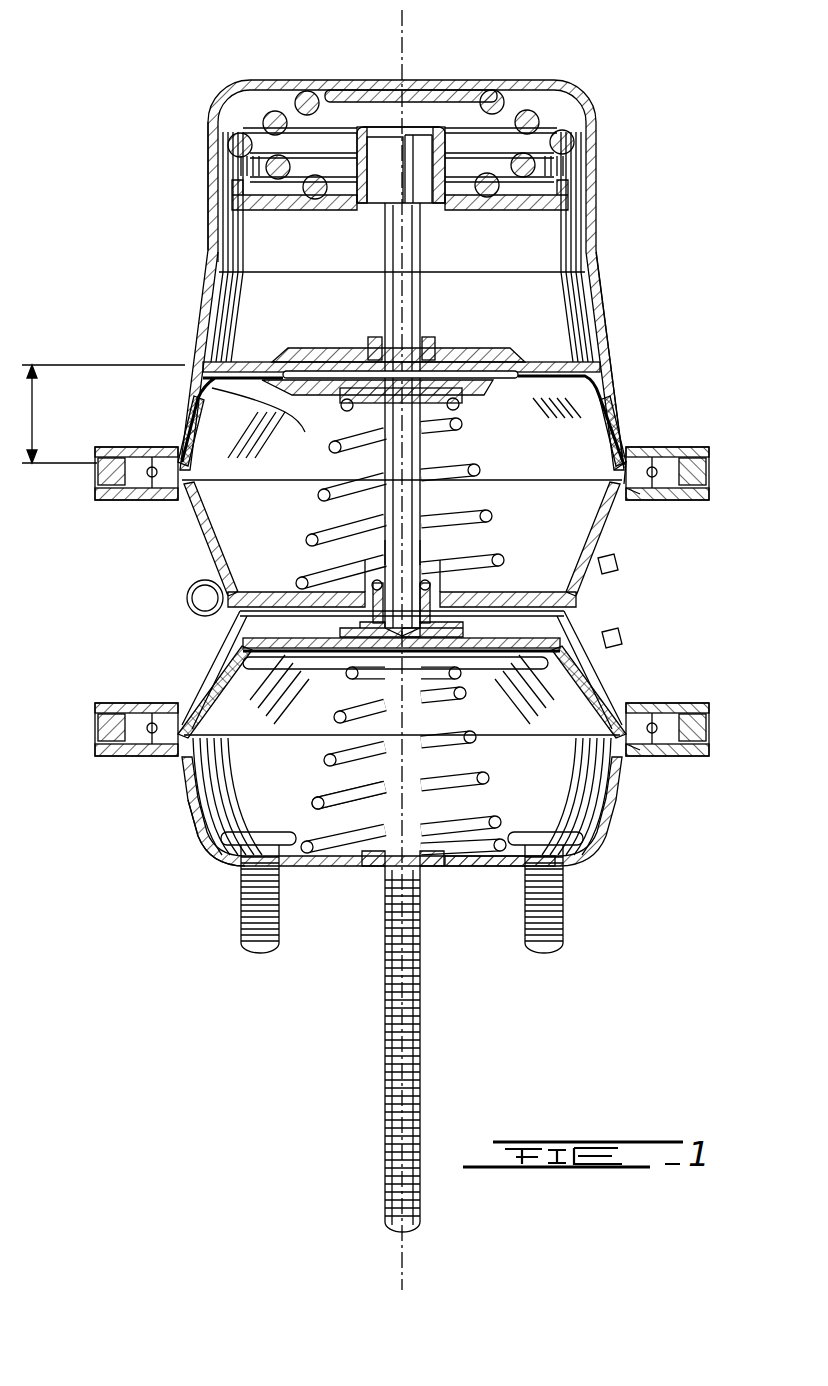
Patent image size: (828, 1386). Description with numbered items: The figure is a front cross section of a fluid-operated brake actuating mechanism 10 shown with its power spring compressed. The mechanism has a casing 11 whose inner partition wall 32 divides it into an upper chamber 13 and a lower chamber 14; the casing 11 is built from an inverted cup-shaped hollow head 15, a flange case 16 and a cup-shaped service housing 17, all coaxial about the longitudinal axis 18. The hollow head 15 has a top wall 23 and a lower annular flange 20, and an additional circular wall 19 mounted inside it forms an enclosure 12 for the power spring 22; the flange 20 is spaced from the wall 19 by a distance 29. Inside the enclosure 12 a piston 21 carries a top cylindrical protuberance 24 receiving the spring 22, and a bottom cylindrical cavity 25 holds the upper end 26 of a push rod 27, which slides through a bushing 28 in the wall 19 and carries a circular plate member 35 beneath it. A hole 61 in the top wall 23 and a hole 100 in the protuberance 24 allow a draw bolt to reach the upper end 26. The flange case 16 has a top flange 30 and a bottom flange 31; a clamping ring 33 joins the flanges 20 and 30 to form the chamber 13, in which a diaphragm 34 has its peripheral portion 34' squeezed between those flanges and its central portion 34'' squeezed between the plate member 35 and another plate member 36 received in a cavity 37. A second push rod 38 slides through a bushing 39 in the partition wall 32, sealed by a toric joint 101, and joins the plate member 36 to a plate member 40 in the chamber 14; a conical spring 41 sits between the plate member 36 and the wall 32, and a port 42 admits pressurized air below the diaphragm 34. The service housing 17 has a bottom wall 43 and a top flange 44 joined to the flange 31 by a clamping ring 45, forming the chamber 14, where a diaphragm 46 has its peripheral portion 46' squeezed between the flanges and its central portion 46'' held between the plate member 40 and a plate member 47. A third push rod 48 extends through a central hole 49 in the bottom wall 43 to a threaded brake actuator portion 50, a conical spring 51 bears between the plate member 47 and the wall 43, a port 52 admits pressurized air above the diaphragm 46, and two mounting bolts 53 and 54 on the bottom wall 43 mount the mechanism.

The fluid-operated brake actuating mechanism 10 is at (128, 150).
The casing 11 is at (206, 258).
The enclosure 12 is at (593, 225).
The upper chamber 13 is at (250, 505).
The lower chamber 14 is at (590, 805).
The hollow head 15 is at (592, 292).
The flange case 16 is at (220, 680).
The service housing 17 is at (198, 818).
The longitudinal axis 18 is at (410, 32).
The additional circular wall 19 is at (580, 372).
The lower outwardly extending annular flange 20 is at (630, 460).
The piston 21 is at (292, 232).
The power spring 22 is at (540, 125).
The top wall 23 is at (458, 96).
The top cylindrical protuberance 24 is at (375, 135).
The bottom cylindrical cavity 25 is at (376, 205).
The upper end of push rod 26 is at (382, 156).
The push rod 27 is at (415, 292).
The bushing 28 is at (368, 340).
The distance 29 is at (101, 414).
The top outwardly extending annular flange 30 is at (645, 495).
The bottom outwardly extending annular flange 31 is at (652, 720).
The inner partition wall 32 is at (490, 598).
The clamping ring 33 is at (708, 470).
The diaphragm 34 is at (352, 418).
The peripheral portion of diaphragm 34' is at (143, 437).
The central portion of diaphragm 34'' is at (436, 412).
The push rod circular plate member 35 is at (458, 364).
The push rod circular plate member 36 is at (332, 426).
The cavity 37 is at (440, 402).
The second push rod 38 is at (395, 552).
The bushing 39 is at (462, 612).
The push rod circular plate member 40 is at (340, 632).
The spring 41 is at (572, 520).
The port 42 is at (615, 568).
The bottom wall 43 is at (445, 864).
The top outwardly extending annular flange 44 is at (645, 738).
The clamping ring 45 is at (97, 758).
The diaphragm 46 is at (402, 708).
The peripheral portion of diaphragm 46' is at (149, 767).
The central portion of diaphragm 46'' is at (470, 673).
The push rod circular plate member 47 is at (325, 660).
The third push rod 48 is at (465, 790).
The central hole 49 is at (395, 868).
The threaded brake actuator portion 50 is at (395, 1045).
The spring 51 is at (316, 800).
The port 52 is at (712, 643).
The mounting bolt 53 is at (240, 912).
The mounting bolt 54 is at (548, 905).
The hole 61 is at (412, 90).
The hole 100 is at (402, 125).
The toric joint 101 is at (368, 585).